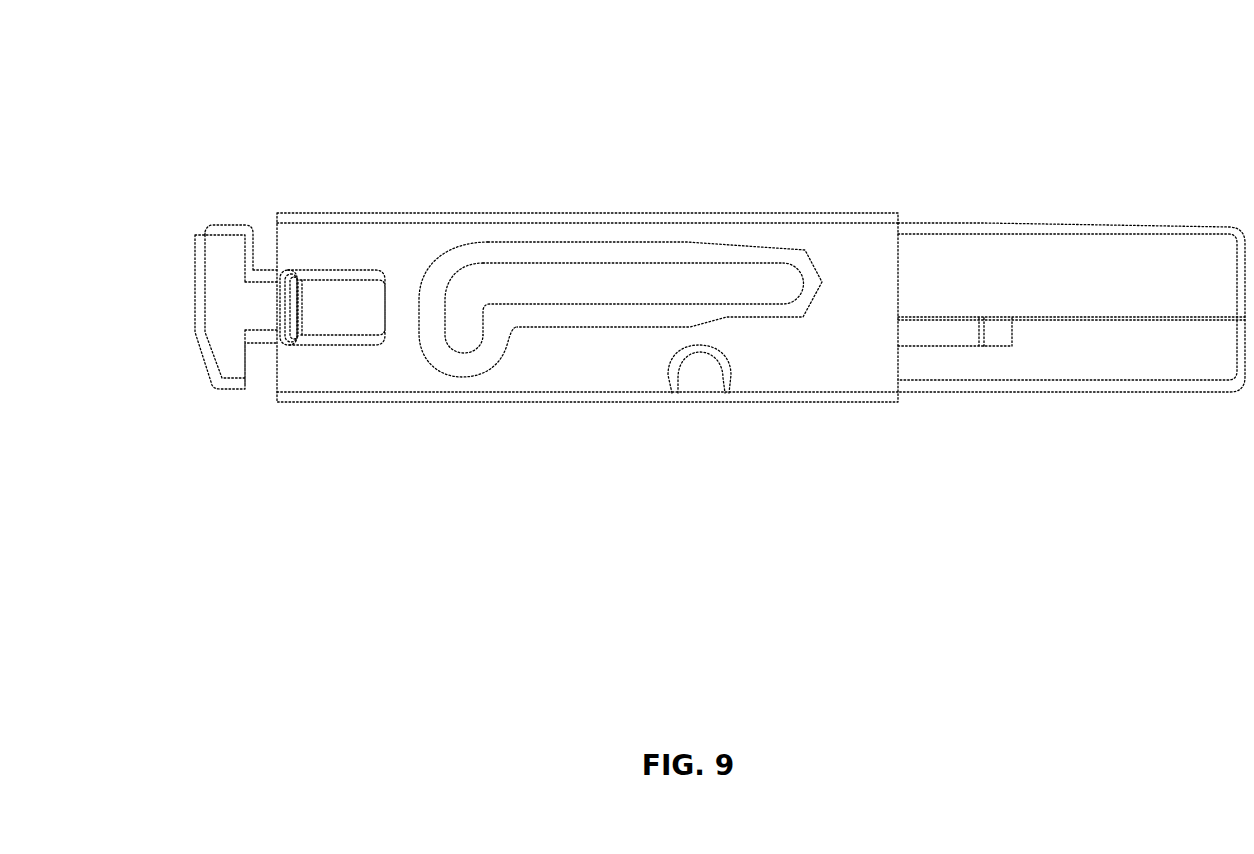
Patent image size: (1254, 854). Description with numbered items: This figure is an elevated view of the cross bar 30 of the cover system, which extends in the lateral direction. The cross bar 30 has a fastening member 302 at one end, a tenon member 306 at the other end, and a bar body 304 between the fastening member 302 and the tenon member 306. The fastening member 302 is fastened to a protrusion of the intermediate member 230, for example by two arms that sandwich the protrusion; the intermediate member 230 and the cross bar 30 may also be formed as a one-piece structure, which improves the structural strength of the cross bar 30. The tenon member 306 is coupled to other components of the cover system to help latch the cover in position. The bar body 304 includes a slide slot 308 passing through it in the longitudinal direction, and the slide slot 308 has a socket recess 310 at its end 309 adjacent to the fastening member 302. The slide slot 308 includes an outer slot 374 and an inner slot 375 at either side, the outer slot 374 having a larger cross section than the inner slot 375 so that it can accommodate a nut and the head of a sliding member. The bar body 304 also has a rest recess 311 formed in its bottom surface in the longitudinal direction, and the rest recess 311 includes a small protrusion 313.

The cross bar 30 is at (978, 72).
The intermediate member 230 is at (225, 270).
The fastening member 302 is at (320, 232).
The bar body 304 is at (435, 223).
The tenon member 306 is at (1043, 248).
The slide slot 308 is at (623, 278).
The end of slide slot 309 is at (490, 242).
The socket recess 310 is at (463, 342).
The rest recess 311 is at (705, 382).
The small protrusion 313 is at (675, 395).
The outer slot 374 is at (611, 242).
The inner slot 375 is at (563, 263).